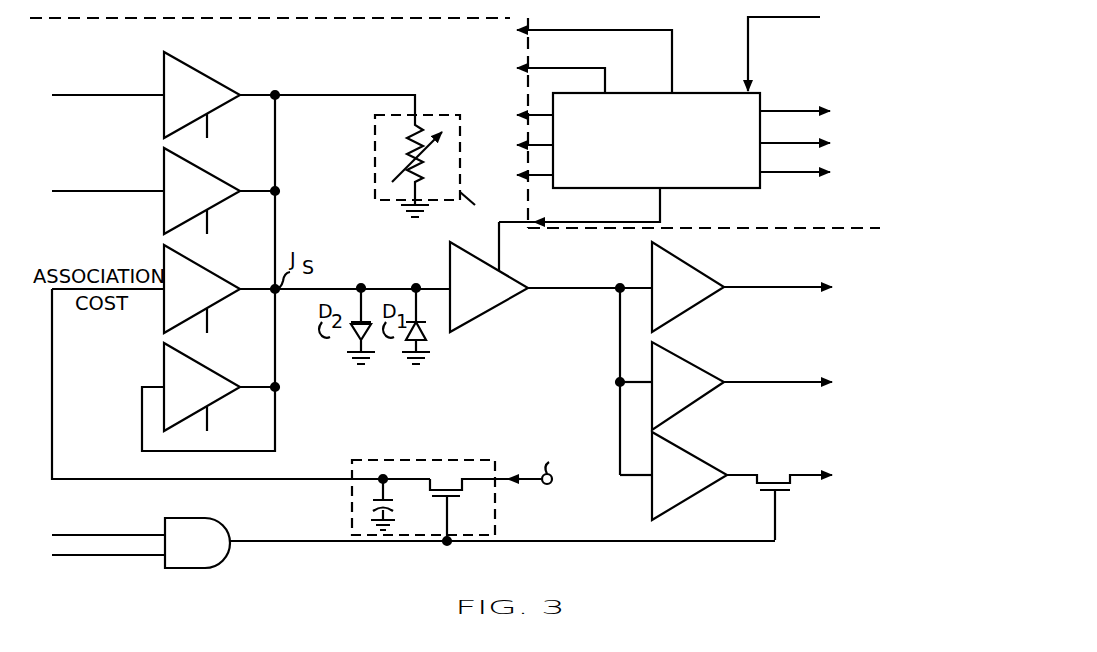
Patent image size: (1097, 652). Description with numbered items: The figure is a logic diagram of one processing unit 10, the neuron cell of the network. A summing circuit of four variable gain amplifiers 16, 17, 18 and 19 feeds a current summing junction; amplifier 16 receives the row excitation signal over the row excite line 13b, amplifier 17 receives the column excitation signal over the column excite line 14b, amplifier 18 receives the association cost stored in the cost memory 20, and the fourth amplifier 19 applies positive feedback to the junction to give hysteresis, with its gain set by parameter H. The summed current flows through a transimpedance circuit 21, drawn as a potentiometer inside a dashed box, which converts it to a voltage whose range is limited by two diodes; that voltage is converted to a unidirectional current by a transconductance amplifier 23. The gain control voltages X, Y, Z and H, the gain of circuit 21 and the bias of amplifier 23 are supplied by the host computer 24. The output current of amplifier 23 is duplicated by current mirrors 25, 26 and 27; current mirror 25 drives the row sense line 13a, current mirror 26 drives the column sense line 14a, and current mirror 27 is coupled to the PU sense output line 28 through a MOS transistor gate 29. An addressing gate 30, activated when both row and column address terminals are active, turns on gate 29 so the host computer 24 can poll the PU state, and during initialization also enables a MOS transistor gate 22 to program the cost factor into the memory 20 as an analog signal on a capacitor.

The processing unit 10 is at (780, 648).
The row sense line 13a is at (790, 287).
The row excite line 13b is at (104, 95).
The column sense line 14a is at (790, 380).
The column excite line 14b is at (104, 191).
The variable gain amplifier 16 is at (206, 80).
The variable gain amplifier 17 is at (221, 194).
The variable gain amplifier 18 is at (307, 292).
The variable gain amplifier 19 is at (210, 397).
The cost memory 20 is at (412, 468).
The transimpedance circuit 21 is at (375, 160).
The MOS transistor gate 22 is at (470, 505).
The transconductance amplifier 23 is at (492, 312).
The host computer 24 is at (716, 93).
The current mirror 25 is at (702, 268).
The current mirror 26 is at (702, 368).
The current mirror 27 is at (713, 467).
The PU sense output line 28 is at (805, 19).
The MOS transistor gate 29 is at (757, 491).
The addressing gate 30 is at (228, 522).